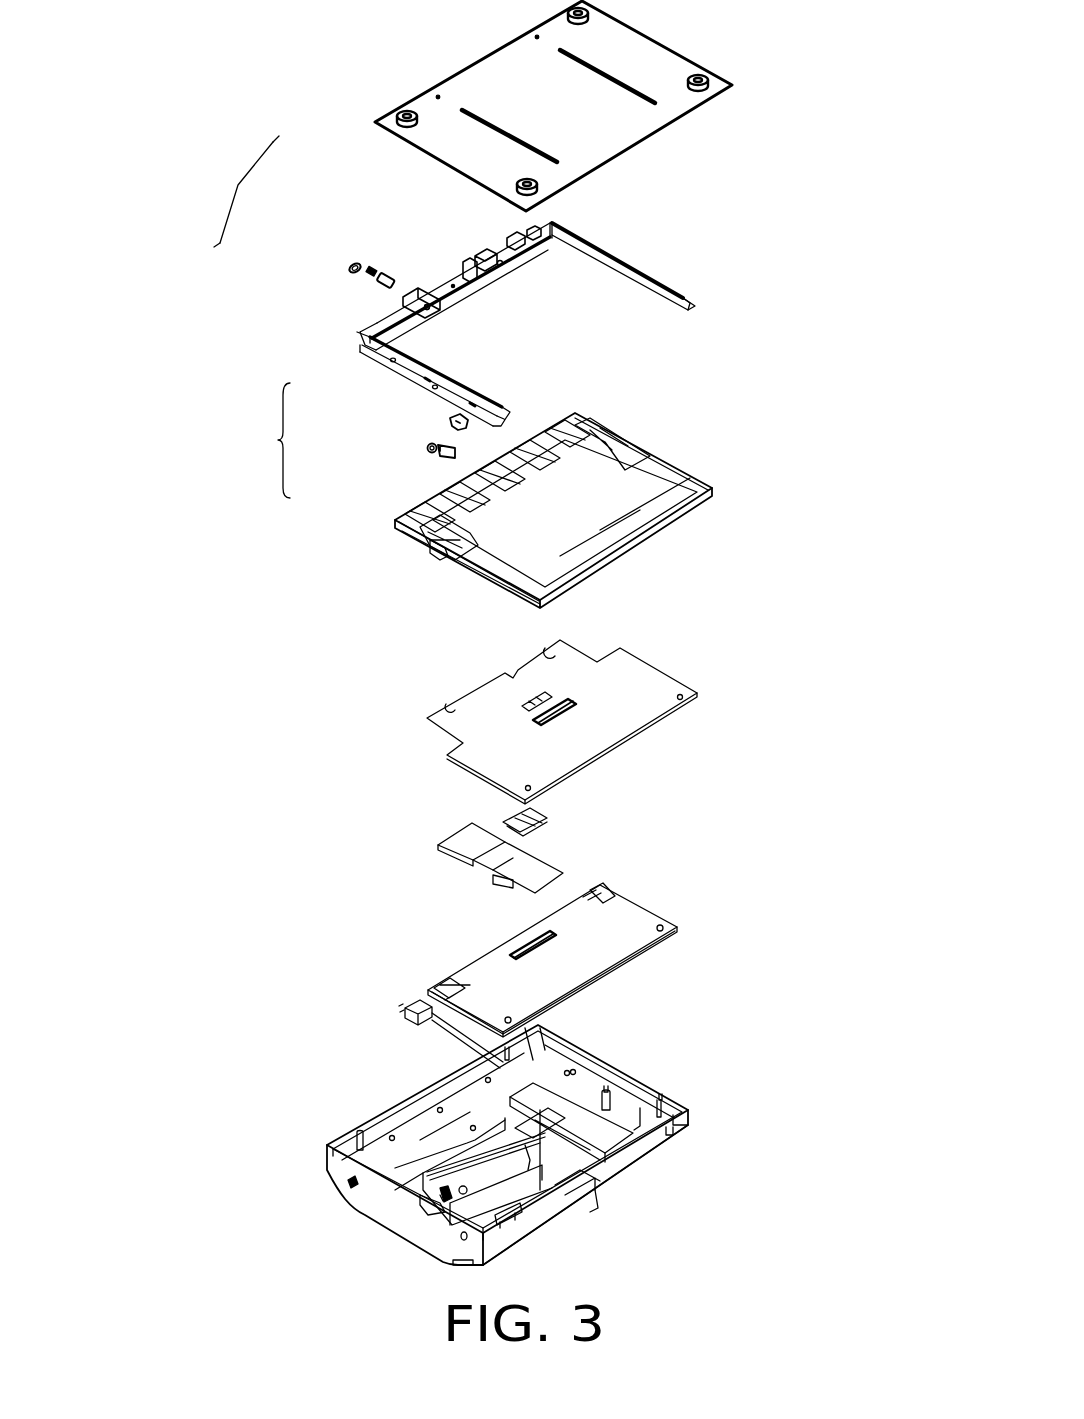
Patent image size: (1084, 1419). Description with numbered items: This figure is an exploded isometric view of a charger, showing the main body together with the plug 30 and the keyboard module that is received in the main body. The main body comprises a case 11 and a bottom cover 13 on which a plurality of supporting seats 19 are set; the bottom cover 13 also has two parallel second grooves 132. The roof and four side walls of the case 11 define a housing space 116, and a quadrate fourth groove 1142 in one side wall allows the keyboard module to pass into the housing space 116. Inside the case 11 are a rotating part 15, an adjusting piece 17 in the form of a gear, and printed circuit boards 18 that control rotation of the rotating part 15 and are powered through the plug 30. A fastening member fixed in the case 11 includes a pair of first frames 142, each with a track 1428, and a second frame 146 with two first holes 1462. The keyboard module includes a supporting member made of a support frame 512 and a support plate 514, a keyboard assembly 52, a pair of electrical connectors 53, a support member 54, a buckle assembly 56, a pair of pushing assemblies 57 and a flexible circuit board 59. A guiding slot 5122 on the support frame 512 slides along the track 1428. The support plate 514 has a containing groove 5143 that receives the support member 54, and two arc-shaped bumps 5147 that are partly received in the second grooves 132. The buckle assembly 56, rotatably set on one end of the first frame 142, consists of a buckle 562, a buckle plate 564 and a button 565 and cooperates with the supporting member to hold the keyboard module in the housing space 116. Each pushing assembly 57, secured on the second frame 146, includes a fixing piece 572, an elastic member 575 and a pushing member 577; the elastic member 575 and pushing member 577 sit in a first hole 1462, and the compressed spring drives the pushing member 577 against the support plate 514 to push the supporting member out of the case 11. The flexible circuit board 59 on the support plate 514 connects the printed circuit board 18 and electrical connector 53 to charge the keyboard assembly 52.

The case 11 is at (686, 1118).
The bottom cover 13 is at (483, 90).
The second grooves 132 is at (608, 73).
The supporting seats 19 is at (400, 110).
The rotating part 15 is at (603, 1195).
The adjusting piece 17 is at (427, 1203).
The printed circuit boards 18 is at (570, 1115).
The plug 30 is at (437, 1030).
The housing space 116 is at (418, 1144).
The fourth groove 1142 is at (675, 1132).
The first frames 142 is at (685, 300).
The track 1428 is at (652, 285).
The second frame 146 is at (393, 327).
The first holes 1462 is at (428, 307).
The keyboard assembly 52 is at (633, 920).
The electrical connectors 53 is at (560, 700).
The support member 54 is at (543, 822).
The buckle assembly 56 is at (261, 440).
The buckle 562 is at (450, 420).
The buckle plate 564 is at (442, 453).
The button 565 is at (427, 447).
The pushing assemblies 57 is at (535, 297).
The fixing piece 572 is at (352, 263).
The elastic member 575 is at (382, 270).
The pushing member 577 is at (409, 272).
The flexible circuit board 59 is at (463, 843).
The support frame 512 is at (677, 472).
The guiding slot 5122 is at (443, 550).
The support plate 514 is at (653, 693).
The containing groove 5143 is at (527, 700).
The bumps 5147 is at (453, 707).